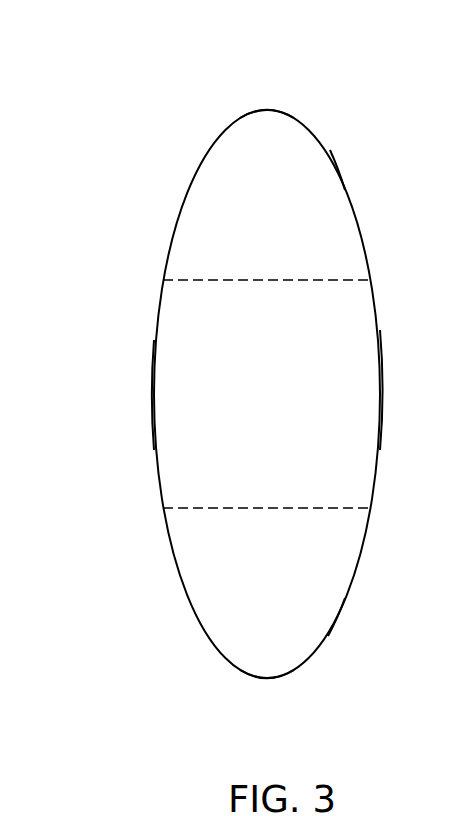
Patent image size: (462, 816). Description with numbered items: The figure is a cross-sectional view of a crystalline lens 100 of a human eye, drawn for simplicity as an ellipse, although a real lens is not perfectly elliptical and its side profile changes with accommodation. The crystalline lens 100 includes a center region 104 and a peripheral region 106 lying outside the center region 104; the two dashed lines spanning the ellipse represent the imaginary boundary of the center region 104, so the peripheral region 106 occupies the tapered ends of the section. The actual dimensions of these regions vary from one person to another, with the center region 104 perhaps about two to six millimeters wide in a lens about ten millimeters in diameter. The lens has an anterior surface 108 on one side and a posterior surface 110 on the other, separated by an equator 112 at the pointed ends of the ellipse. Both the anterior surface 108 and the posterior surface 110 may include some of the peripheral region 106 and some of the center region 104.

The crystalline lens 100 is at (351, 103).
The center region 104 is at (380, 388).
The peripheral region 106 is at (328, 183).
The anterior surface 108 is at (154, 391).
The posterior surface 110 is at (374, 292).
The equator 112 is at (263, 110).